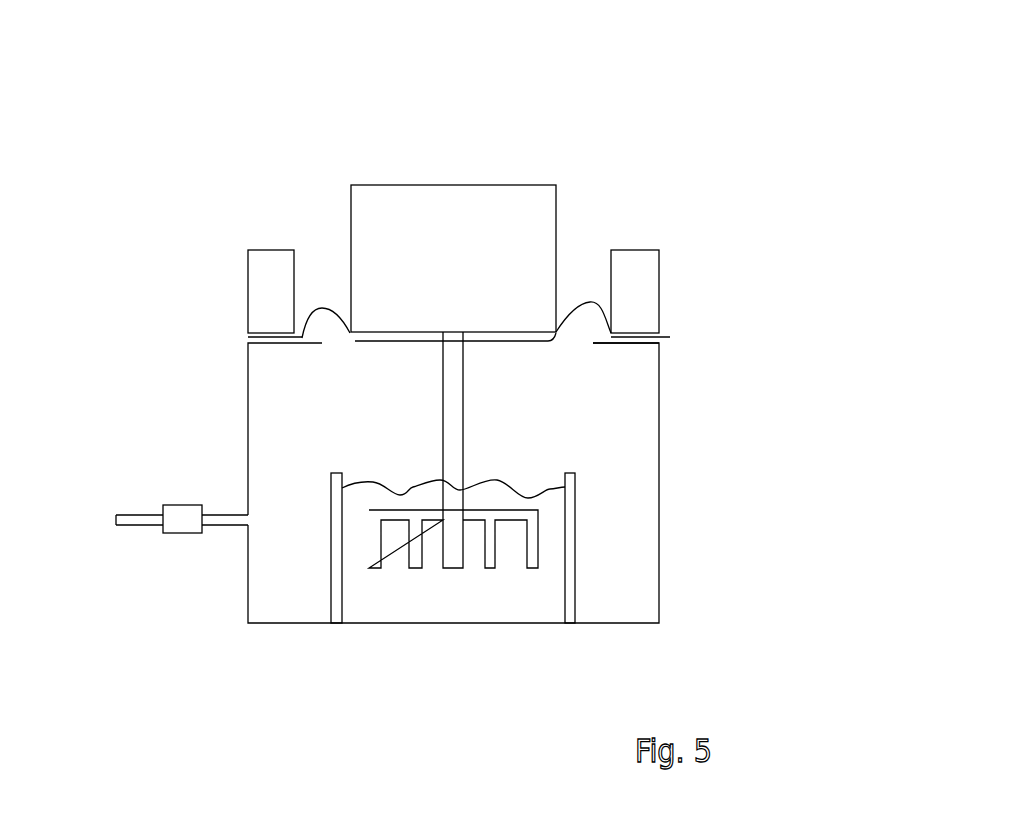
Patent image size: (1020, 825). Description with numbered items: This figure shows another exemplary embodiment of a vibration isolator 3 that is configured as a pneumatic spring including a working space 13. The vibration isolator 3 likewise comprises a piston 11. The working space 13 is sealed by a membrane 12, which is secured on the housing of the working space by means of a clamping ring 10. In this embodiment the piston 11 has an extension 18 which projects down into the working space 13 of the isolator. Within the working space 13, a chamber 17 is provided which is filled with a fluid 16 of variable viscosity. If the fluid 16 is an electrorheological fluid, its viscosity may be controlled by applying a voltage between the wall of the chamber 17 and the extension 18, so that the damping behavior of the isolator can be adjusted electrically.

The vibration isolator 3 is at (192, 440).
The clamping ring 10 is at (266, 277).
The piston 11 is at (489, 240).
The membrane 12 is at (585, 302).
The working space 13 is at (610, 368).
The fluid 16 is at (550, 520).
The chamber 17 is at (568, 547).
The extension 18 is at (455, 381).